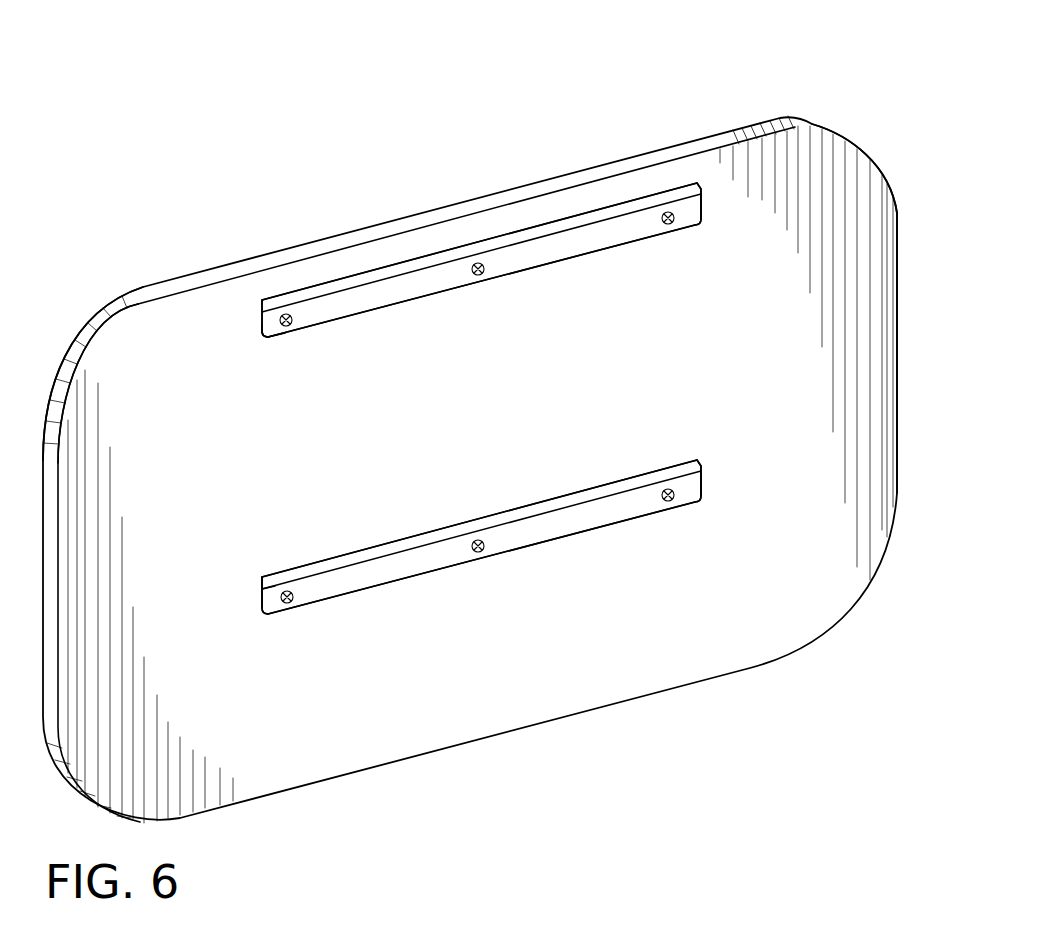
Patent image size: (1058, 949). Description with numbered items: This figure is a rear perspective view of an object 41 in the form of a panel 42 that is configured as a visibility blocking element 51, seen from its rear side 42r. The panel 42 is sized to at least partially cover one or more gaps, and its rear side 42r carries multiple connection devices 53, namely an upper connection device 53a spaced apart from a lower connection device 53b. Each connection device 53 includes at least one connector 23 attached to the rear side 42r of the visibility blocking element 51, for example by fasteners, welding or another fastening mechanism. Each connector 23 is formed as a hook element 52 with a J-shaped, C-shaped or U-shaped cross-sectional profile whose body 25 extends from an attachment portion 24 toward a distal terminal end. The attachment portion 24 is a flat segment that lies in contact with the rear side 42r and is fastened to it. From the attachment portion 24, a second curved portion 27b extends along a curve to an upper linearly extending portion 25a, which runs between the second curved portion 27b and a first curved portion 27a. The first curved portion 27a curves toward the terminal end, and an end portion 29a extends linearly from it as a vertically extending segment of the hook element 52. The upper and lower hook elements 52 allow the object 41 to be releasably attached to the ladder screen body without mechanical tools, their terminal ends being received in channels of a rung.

The object 41 is at (862, 621).
The panel 42 is at (905, 325).
The rear side 42r is at (853, 188).
The visibility blocking element 51 is at (803, 73).
The hook element 52 is at (560, 213).
The connection device 53 is at (240, 247).
The upper connection device 53a is at (245, 345).
The lower connection device 53b is at (232, 593).
The connector 23 is at (463, 188).
The attachment portion 24 is at (418, 292).
The bracket channel 25 is at (634, 134).
The upper linearly extending portion 25a is at (300, 297).
The first curved portion 27a is at (700, 190).
The second curved portion 27b is at (263, 303).
The end portion 29a is at (697, 200).